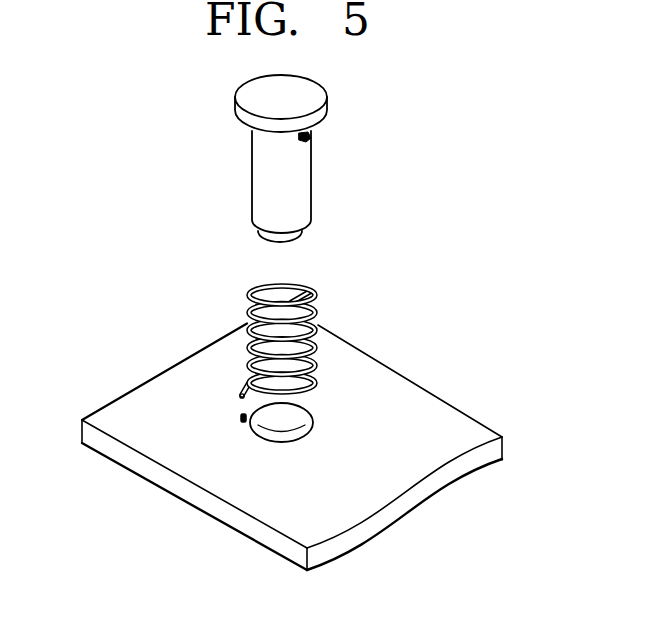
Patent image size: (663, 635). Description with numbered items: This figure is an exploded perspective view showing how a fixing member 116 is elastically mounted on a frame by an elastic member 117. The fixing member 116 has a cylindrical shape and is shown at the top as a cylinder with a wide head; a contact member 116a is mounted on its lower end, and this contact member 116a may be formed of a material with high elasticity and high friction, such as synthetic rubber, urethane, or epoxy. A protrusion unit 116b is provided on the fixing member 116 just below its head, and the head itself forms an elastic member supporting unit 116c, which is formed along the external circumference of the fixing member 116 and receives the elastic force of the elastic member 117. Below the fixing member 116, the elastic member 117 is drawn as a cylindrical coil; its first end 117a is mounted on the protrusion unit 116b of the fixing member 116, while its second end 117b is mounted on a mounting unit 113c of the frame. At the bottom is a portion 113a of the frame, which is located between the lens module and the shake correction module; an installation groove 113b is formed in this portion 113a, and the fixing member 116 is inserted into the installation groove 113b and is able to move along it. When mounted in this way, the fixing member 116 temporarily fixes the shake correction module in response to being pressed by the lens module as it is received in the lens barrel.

The portion of the frame 113a is at (213, 505).
The installation groove 113b is at (302, 422).
The mounting unit 113c is at (242, 420).
The fixing member 116 is at (302, 187).
The contact member 116a is at (298, 235).
The protrusion unit 116b is at (313, 139).
The elastic member supporting unit 116c is at (316, 105).
The elastic member 117 is at (228, 318).
The first end of the elastic member 117a is at (289, 301).
The second end of the elastic member 117b is at (243, 391).